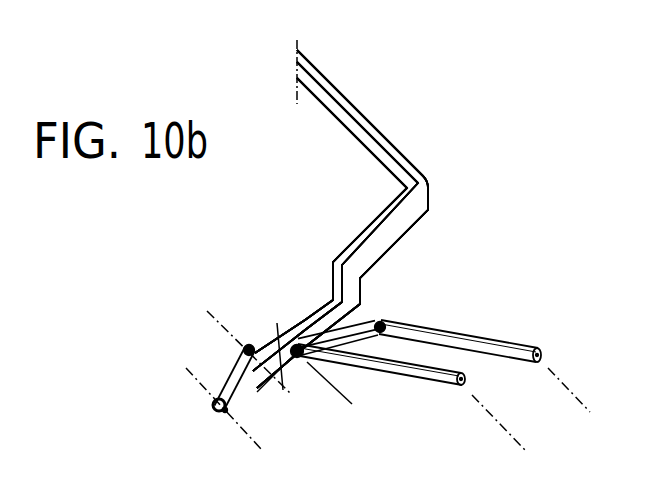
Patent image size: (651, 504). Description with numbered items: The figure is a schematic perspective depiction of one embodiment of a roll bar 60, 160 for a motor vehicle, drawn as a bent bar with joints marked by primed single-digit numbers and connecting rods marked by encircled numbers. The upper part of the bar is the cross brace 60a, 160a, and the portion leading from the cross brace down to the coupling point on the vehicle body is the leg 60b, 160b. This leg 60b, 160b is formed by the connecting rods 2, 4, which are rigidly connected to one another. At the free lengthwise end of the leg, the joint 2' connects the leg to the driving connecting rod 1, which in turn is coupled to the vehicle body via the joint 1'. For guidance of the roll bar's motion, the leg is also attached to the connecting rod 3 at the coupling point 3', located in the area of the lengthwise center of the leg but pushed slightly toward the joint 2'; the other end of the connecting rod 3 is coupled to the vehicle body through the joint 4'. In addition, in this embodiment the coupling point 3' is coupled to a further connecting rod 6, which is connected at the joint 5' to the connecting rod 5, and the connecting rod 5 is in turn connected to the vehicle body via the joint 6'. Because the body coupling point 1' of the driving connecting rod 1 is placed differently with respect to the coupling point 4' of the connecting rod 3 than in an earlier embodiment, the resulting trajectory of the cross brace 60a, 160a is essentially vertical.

The roll bar 60 is at (407, 133).
The bar (alternate embodiment) 160 is at (412, 219).
The cross brace 60a is at (338, 100).
The first leg of bar (alternate embodiment) 160a is at (393, 111).
The leg 60b is at (402, 223).
The second leg of bar (alternate embodiment) 160b is at (429, 285).
The driving connecting rod 1 is at (260, 405).
The connecting rod 2 is at (300, 299).
The connecting rod 3 is at (381, 396).
The connecting rod 4 is at (306, 297).
The connecting rod 5 is at (460, 320).
The connecting rod 6 is at (338, 385).
The joint 1' is at (236, 353).
The joint 2' is at (224, 426).
The coupling point 3' is at (329, 395).
The joint 4' is at (488, 427).
The joint 5' is at (397, 307).
The joint 6' is at (575, 378).